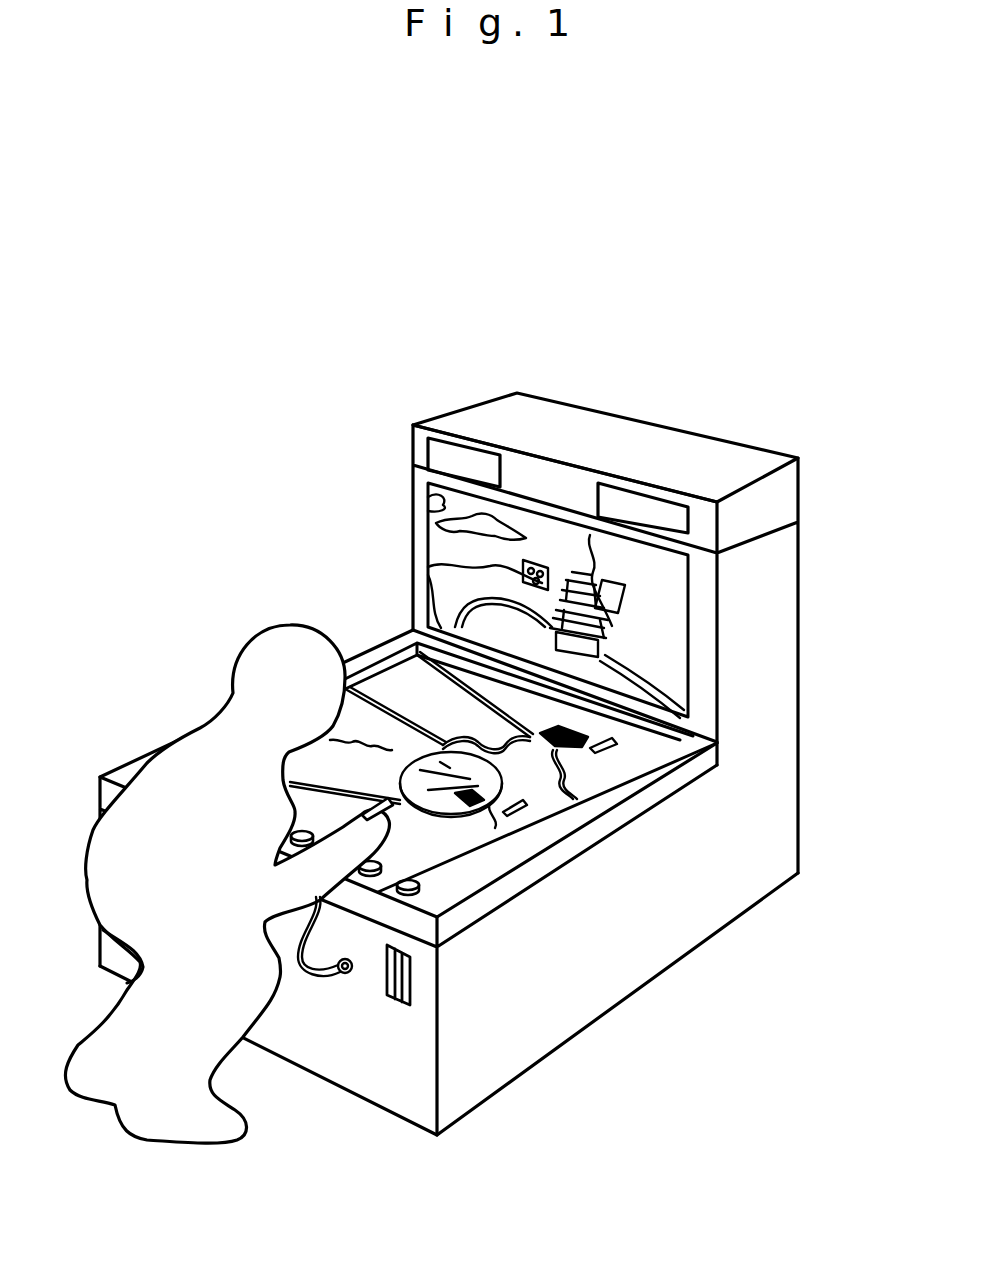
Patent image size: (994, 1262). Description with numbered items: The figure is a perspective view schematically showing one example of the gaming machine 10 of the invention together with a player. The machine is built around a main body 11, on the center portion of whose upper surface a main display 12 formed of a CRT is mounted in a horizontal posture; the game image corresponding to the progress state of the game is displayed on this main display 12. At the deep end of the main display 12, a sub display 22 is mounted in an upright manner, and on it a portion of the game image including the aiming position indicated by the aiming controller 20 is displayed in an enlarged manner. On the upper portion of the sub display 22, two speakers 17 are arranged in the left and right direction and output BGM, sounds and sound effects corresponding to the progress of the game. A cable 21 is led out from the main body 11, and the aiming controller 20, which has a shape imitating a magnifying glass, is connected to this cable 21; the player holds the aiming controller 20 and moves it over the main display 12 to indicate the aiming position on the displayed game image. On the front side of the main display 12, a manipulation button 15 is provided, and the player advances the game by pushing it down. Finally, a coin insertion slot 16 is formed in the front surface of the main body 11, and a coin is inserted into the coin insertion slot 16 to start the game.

The gaming machine 10 is at (464, 746).
The main body 11 is at (756, 650).
The main display 12 is at (640, 748).
The manipulation button 15 is at (423, 882).
The coin insertion slot 16 is at (410, 980).
The speakers 17 is at (440, 458).
The aiming controller 20 is at (490, 797).
The cable 21 is at (342, 975).
The sub display 22 is at (678, 674).